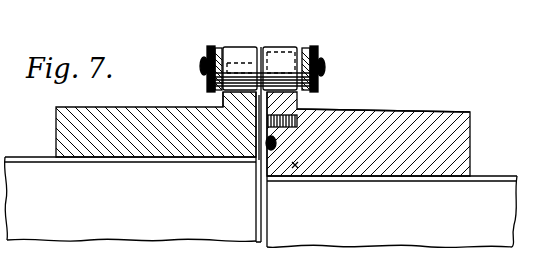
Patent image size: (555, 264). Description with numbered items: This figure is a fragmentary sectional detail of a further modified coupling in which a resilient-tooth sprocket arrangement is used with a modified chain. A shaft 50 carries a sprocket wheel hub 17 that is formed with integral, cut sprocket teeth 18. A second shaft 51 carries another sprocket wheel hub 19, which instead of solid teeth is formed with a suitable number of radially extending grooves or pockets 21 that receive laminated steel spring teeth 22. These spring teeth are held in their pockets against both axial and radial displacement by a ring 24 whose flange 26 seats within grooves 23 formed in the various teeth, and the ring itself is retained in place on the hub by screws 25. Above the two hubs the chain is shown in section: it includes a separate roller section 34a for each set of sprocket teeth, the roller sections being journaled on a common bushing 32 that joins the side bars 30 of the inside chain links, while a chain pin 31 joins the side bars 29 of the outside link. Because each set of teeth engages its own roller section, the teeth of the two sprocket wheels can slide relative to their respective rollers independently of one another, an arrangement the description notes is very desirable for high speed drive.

The sprocket wheel hub 17 is at (122, 116).
The sprocket teeth 18 is at (226, 100).
The sprocket wheel hub 19 is at (405, 118).
The grooves or pockets 21 is at (291, 170).
The laminated steel spring teeth 22 is at (300, 101).
The grooves 23 is at (272, 144).
The ring 24 is at (266, 138).
The screws 25 is at (376, 110).
The flange 26 is at (266, 148).
The side bars 29 is at (206, 58).
The side bars 30 is at (213, 45).
The chain pin 31 is at (323, 68).
The common bushing 32 is at (260, 46).
The roller section 34a is at (245, 39).
The shaft 50 is at (130, 199).
The shaft 51 is at (392, 211).